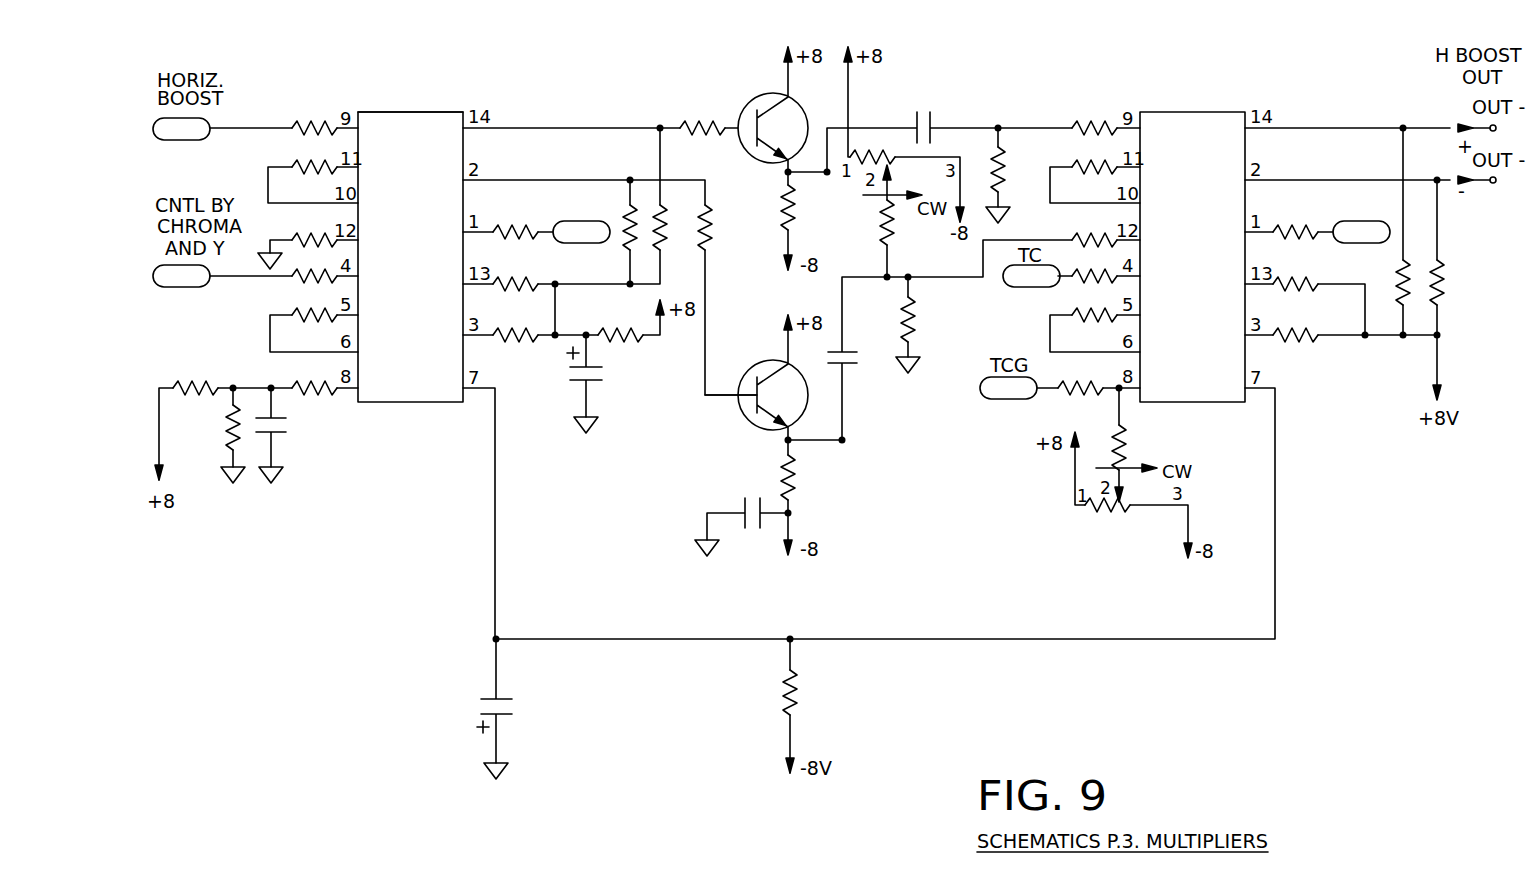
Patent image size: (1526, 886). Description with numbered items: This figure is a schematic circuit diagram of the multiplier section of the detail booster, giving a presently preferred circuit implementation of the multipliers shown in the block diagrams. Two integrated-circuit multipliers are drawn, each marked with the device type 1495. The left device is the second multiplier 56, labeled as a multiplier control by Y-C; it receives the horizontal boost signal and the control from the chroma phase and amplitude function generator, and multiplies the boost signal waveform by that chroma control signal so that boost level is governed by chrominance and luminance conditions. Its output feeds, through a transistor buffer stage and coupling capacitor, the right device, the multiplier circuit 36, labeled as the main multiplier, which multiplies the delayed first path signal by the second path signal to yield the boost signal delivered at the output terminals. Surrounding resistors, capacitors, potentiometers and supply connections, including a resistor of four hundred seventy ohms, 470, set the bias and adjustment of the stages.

The second multiplier 56 is at (410, 257).
The multiplier circuit 36 is at (1180, 236).
The 470 ohm resistor to ground 470 is at (924, 335).
The type 1495 multiplier integrated circuit 1495 is at (410, 152).